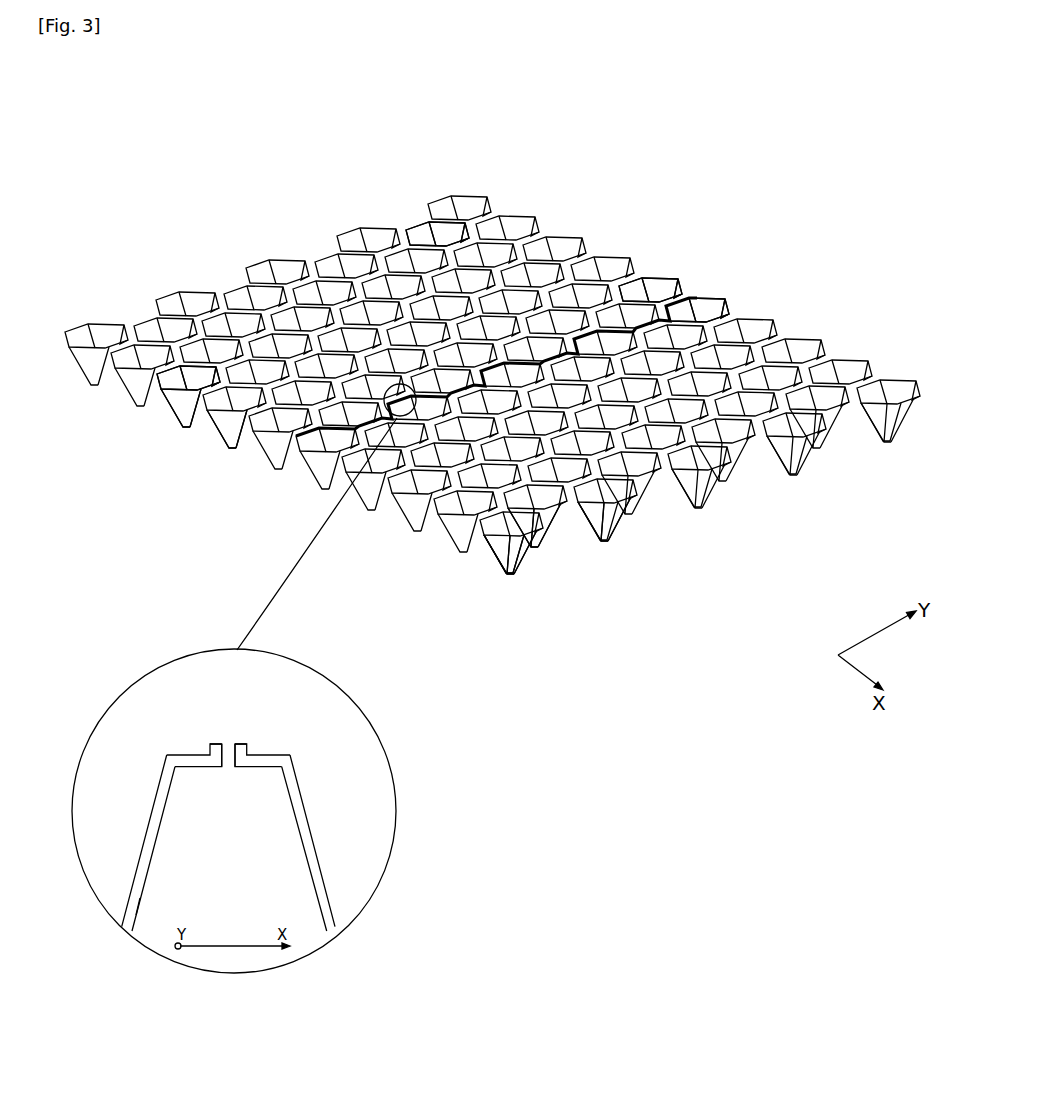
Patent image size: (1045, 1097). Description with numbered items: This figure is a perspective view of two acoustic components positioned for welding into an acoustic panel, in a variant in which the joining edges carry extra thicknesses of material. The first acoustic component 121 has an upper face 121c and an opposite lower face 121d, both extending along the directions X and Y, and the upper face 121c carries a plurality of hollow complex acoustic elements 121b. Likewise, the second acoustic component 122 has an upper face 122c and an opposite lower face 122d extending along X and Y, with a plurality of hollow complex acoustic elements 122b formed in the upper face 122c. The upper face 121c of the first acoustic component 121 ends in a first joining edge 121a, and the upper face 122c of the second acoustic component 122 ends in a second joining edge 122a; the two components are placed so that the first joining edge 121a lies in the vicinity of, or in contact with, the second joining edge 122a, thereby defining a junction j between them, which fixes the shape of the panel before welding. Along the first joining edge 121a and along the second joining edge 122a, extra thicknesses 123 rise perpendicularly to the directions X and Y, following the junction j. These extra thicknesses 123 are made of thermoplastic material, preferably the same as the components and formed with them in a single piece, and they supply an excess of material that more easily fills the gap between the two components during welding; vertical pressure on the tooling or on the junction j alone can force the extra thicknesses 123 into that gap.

The first acoustic component 121 is at (632, 216).
The first joining edge 121a is at (697, 294).
The hollow complex acoustic elements 121b is at (187, 388).
The upper face 121c is at (412, 228).
The lower face 121d is at (142, 898).
The second acoustic component 122 is at (863, 315).
The second joining edge 122a is at (697, 297).
The hollow complex acoustic elements 122b is at (515, 534).
The upper face 122c is at (645, 506).
The lower face 122d is at (223, 433).
The extra thicknesses of material 123 is at (240, 740).
The junction j is at (688, 288).